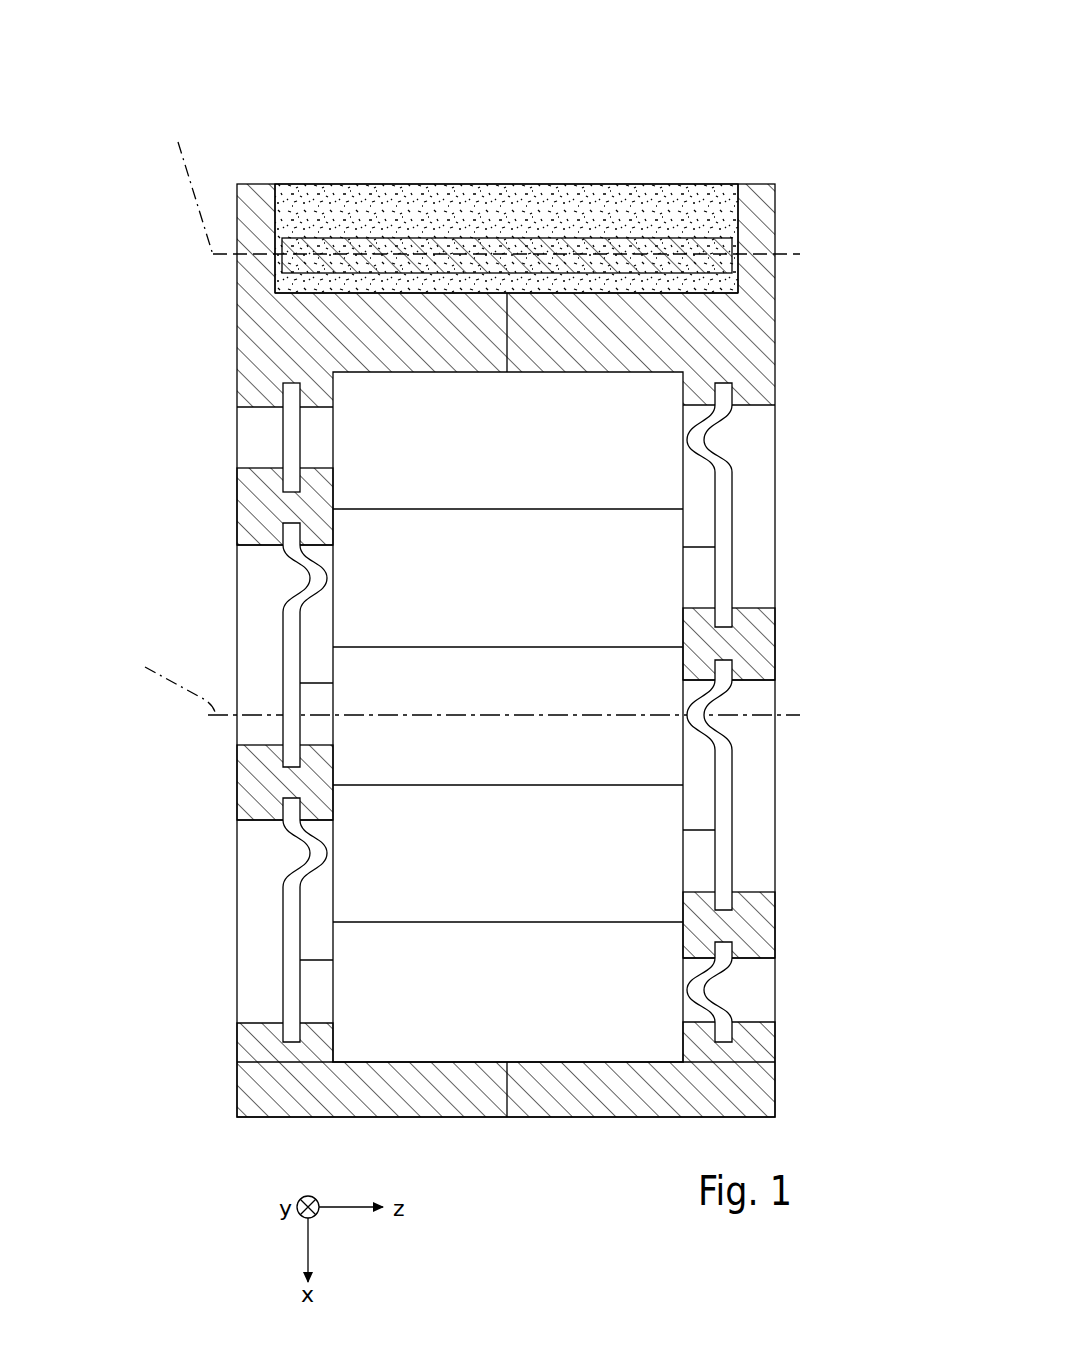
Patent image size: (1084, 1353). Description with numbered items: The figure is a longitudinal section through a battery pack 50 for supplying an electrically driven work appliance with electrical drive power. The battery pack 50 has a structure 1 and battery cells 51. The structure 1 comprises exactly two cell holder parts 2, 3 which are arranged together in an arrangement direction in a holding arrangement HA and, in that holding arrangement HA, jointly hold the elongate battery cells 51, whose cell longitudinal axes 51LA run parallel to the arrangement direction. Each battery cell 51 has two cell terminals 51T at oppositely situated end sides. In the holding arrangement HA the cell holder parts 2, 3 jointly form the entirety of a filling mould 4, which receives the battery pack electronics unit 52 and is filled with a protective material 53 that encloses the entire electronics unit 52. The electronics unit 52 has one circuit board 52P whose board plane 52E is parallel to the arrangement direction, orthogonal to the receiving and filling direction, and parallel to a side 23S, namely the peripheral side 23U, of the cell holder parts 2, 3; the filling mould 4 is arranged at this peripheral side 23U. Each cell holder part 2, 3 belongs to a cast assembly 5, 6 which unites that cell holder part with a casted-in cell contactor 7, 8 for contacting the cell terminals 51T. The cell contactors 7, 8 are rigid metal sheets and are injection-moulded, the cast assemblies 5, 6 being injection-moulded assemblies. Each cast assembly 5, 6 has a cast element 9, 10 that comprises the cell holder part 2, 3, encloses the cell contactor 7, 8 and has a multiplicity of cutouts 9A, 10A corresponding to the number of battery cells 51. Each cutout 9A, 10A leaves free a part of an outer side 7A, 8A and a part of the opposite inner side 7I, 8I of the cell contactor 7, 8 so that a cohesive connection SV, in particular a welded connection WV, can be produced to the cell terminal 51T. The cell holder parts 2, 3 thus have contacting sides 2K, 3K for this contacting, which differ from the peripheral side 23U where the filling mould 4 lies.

The structure 1 is at (292, 100).
The battery pack 50 is at (424, 164).
The board plane 52E is at (182, 185).
The filling mould 4 is at (262, 205).
The circuit board 52P is at (322, 240).
The protective material 53 is at (422, 218).
The battery pack electronics unit 52 is at (507, 194).
The holding arrangement HA is at (752, 205).
The cell holder part 2 is at (245, 283).
The cell holder part 3 is at (772, 283).
The side 23S is at (322, 705).
The peripheral side 23U is at (567, 295).
The cutout 9A is at (500, 712).
The outer side 7A is at (500, 712).
The inner side 7I is at (500, 712).
The cohesive connection SV is at (500, 712).
The welded connection WV is at (283, 420).
The cell contactor 7 is at (500, 712).
The cast assembly 5 is at (265, 515).
The battery cells 51 is at (507, 686).
The cell terminal 51T is at (548, 455).
The cell longitudinal axis 51LA is at (455, 676).
The cast assembly 6 is at (750, 637).
The cell contactor 8 is at (738, 646).
The outer side 8A is at (738, 646).
The inner side 8I is at (715, 845).
The cast element 10 is at (794, 984).
The cutout 10A is at (745, 1020).
The cast element 9 is at (255, 1060).
The contacting side 2K is at (235, 1095).
The contacting side 3K is at (778, 1095).